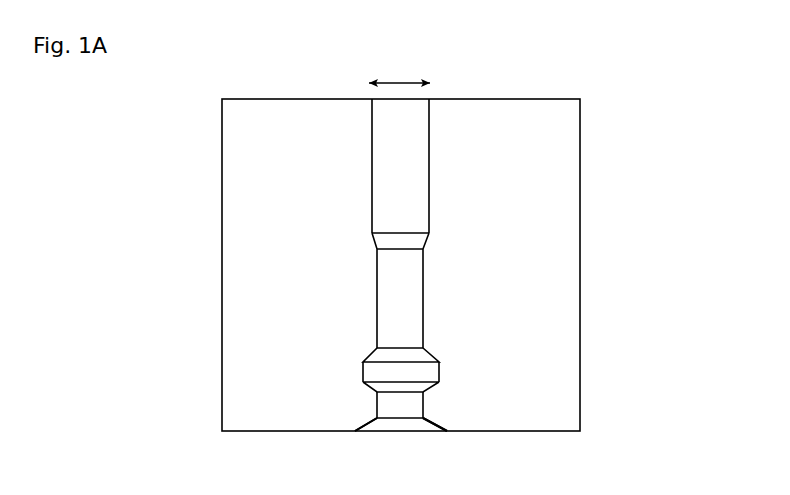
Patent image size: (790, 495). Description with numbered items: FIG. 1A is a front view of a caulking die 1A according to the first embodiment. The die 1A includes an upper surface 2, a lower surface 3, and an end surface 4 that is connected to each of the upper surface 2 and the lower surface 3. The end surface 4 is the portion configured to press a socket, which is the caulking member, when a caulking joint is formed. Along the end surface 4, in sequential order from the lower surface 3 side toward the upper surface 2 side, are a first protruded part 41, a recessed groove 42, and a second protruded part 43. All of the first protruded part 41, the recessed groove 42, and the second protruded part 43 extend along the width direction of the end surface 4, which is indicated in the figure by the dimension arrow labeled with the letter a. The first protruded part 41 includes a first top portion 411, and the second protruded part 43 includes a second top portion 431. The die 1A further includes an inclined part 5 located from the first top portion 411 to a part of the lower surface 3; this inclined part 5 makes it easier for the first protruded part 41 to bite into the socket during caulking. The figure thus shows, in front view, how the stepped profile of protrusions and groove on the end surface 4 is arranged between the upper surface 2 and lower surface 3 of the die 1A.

The die 1A is at (656, 75).
The upper surface 2 is at (452, 99).
The end surface 4 is at (408, 140).
The second protruded part 43 is at (525, 290).
The second top portion 431 is at (415, 298).
The recessed groove 42 is at (432, 370).
The first protruded part 41 is at (517, 411).
The first top portion 411 is at (413, 407).
The lower surface 3 is at (380, 433).
The inclined part 5 is at (417, 433).